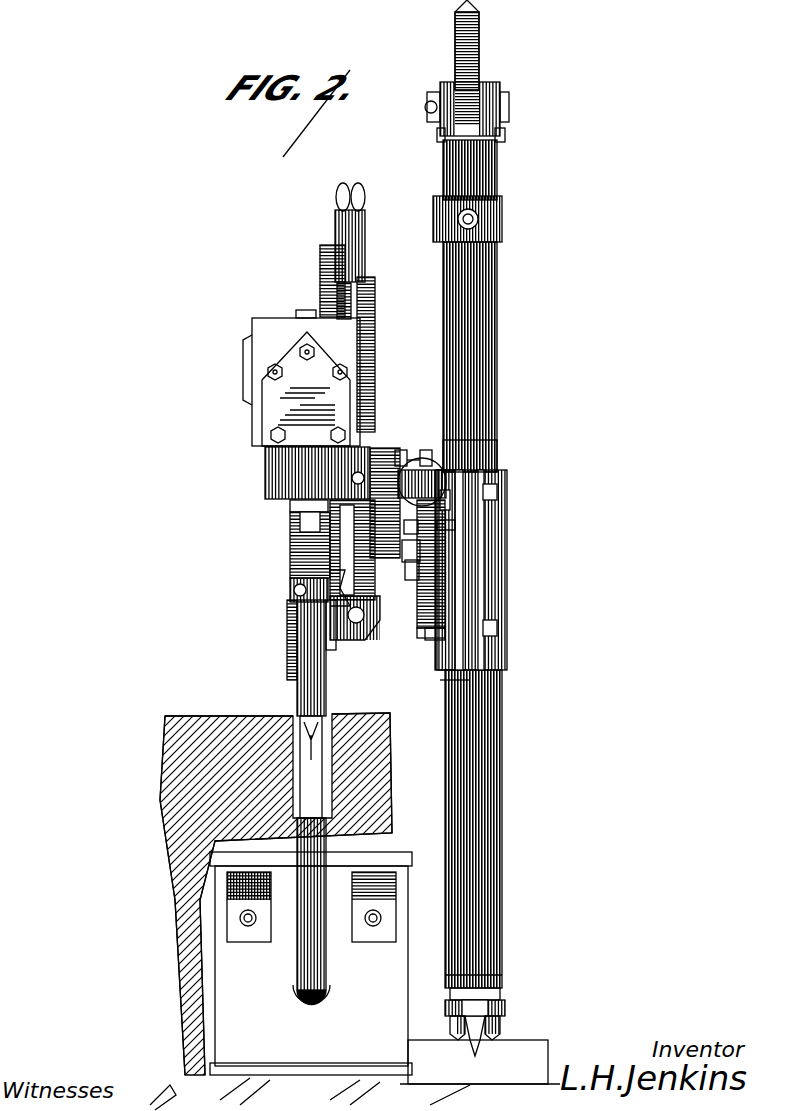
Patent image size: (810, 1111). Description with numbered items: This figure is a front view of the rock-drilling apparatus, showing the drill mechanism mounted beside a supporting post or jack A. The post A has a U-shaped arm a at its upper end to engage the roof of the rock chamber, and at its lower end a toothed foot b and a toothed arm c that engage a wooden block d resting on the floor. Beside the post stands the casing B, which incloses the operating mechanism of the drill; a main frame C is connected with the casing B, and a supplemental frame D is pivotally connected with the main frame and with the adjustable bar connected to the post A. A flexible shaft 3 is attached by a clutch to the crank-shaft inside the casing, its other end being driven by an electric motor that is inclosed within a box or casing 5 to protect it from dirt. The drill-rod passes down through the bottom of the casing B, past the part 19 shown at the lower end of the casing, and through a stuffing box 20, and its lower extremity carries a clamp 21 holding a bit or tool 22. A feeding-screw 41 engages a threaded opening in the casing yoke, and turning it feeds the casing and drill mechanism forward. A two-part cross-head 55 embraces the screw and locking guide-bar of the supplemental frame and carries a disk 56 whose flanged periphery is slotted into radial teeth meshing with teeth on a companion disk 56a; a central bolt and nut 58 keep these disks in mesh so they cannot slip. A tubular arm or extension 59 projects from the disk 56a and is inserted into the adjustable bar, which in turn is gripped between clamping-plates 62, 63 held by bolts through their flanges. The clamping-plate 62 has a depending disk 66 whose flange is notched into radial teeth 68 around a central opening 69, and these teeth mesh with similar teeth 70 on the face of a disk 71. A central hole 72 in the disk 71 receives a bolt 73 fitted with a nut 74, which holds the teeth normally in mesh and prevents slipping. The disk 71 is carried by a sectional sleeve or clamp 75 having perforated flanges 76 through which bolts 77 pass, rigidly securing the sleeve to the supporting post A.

The supporting post or jack A is at (472, 500).
The U-shaped arm a is at (472, 70).
The toothed foot b is at (503, 1028).
The toothed arm c is at (505, 1008).
The wooden block d is at (480, 1062).
The casing B is at (301, 378).
The main frame C is at (323, 281).
The supplemental frame D is at (373, 354).
The flexible shaft 3 is at (296, 641).
The box or casing 5 is at (311, 953).
The chuck sleeve 19 is at (300, 548).
The stuffing box 20 is at (290, 504).
The clamp 21 is at (292, 600).
The bit or tool 22 is at (297, 667).
The feeding-screw 41 is at (337, 296).
The cross-head 55 is at (340, 540).
The disk 56 is at (380, 448).
The disk 56a is at (395, 450).
The nut 58 is at (445, 465).
The tubular arm or extension 59 is at (410, 472).
The clamping-plate 62 is at (445, 515).
The clamping-plate 63 is at (402, 553).
The depending disk 66 is at (420, 606).
The radial teeth 68 is at (428, 615).
The opening 69 is at (392, 590).
The teeth 70 is at (436, 640).
The disk 71 is at (455, 600).
The central hole 72 is at (455, 548).
The bolt 73 is at (408, 534).
The nut 74 is at (408, 582).
The sectional sleeve or clamp 75 is at (505, 660).
The perforated flanges 76 is at (465, 686).
The bolts 77 is at (497, 492).